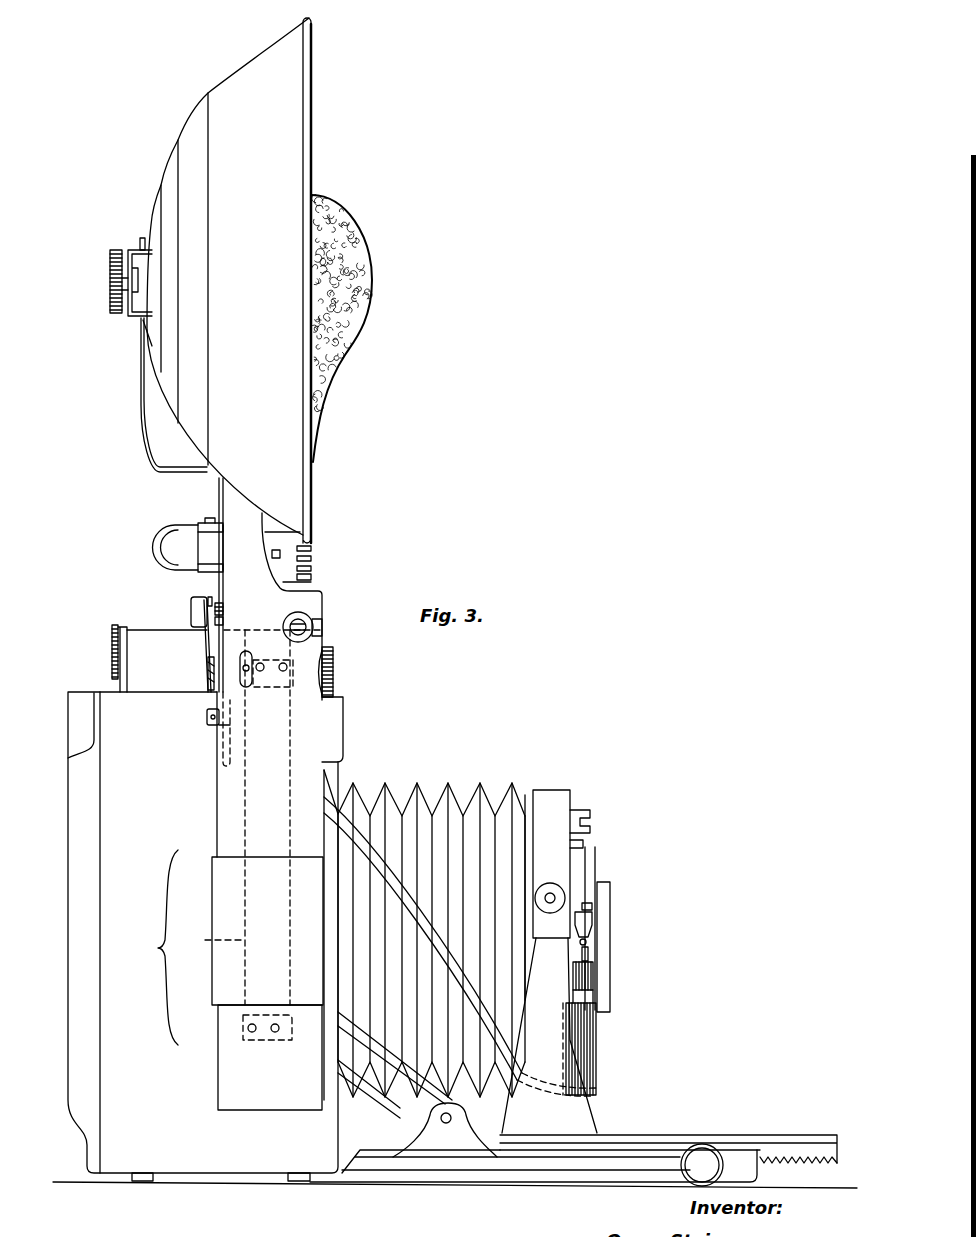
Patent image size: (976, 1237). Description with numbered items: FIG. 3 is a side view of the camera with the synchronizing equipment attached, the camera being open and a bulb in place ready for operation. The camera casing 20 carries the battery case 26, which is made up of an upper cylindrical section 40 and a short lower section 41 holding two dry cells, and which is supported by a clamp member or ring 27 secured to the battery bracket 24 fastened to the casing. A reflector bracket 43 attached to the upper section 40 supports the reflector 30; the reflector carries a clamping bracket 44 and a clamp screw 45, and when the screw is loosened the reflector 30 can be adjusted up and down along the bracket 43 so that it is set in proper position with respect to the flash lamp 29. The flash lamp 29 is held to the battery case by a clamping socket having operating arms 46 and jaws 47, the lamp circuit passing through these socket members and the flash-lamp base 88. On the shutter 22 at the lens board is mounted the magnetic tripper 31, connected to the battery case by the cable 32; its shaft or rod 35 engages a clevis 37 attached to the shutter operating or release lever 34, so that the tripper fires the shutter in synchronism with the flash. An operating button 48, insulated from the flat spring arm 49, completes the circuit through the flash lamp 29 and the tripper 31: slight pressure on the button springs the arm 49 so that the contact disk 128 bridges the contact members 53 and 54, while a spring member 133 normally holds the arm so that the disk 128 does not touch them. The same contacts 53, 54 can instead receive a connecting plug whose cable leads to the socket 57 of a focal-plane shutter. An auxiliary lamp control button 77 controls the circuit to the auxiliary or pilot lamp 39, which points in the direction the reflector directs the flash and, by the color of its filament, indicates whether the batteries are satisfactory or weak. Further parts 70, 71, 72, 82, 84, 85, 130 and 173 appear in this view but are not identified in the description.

The camera casing 20 is at (112, 696).
The shutter 22 is at (585, 862).
The battery bracket 24 is at (211, 940).
The battery case 26 is at (149, 947).
The clamp member or ring 27 is at (222, 899).
The flash lamp or bulb 29 is at (370, 280).
The reflector 30 is at (312, 128).
The magnetic tripper 31 is at (616, 985).
The cable 32 is at (362, 800).
The operating or release lever 34 is at (592, 906).
The shaft or rod 35 is at (588, 955).
The clevis 37 is at (592, 931).
The auxiliary lamp 39 is at (346, 650).
The upper battery-case section 40 is at (227, 800).
The lower battery-case section 41 is at (220, 1093).
The reflector bracket 43 is at (140, 375).
The clamping bracket 44 is at (144, 252).
The clamp screw 45 is at (110, 278).
The operating arms 46 is at (150, 548).
The jaws 47 is at (311, 557).
The operating button 48 is at (191, 609).
The flat spring member or arm 49 is at (205, 652).
The contact member 53 is at (208, 598).
The connecting member 54 is at (223, 622).
The socket 57 is at (93, 718).
The control knob 70 is at (313, 629).
The knob screw 71 is at (303, 622).
The knob hub 72 is at (314, 635).
The auxiliary lamp control button 77 is at (252, 651).
The lamp clip 82 is at (200, 527).
The lamp holder 84 is at (205, 548).
The clip spring 85 is at (210, 519).
The flash-lamp base 88 is at (311, 577).
The contact disk 128 is at (223, 611).
The contact block 130 is at (207, 718).
The spring member 133 is at (208, 680).
The standard bracket 173 is at (590, 815).